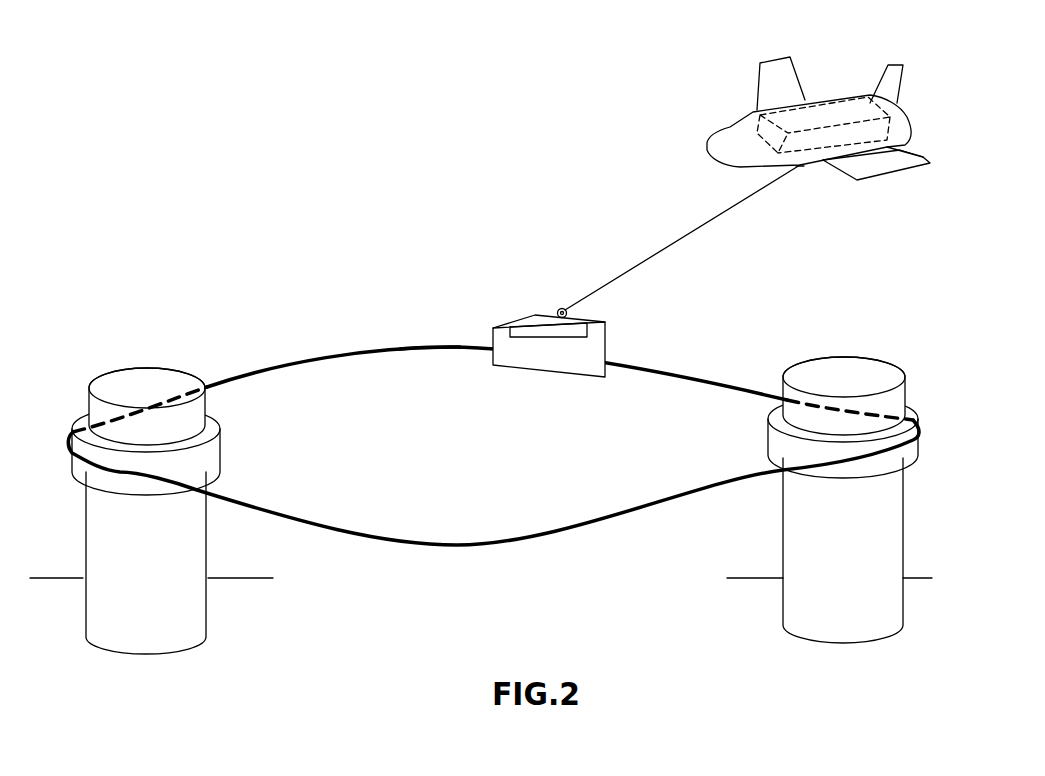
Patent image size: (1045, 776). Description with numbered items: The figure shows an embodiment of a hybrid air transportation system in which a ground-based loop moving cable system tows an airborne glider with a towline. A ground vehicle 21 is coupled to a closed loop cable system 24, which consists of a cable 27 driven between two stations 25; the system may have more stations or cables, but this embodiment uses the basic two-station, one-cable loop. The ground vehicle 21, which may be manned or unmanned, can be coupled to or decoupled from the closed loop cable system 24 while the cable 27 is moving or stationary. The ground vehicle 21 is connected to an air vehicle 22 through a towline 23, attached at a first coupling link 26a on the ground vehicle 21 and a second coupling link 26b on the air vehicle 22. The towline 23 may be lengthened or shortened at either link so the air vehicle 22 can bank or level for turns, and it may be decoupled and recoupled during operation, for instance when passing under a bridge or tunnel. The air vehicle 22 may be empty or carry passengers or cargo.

The ground vehicle 21 is at (505, 313).
The air vehicle 22 is at (727, 118).
The towline 23 is at (680, 238).
The closed loop cable system 24 is at (323, 333).
The stations 25 is at (137, 383).
The first coupling link 26a is at (562, 308).
The second coupling link 26b is at (803, 167).
The cable 27 is at (432, 353).